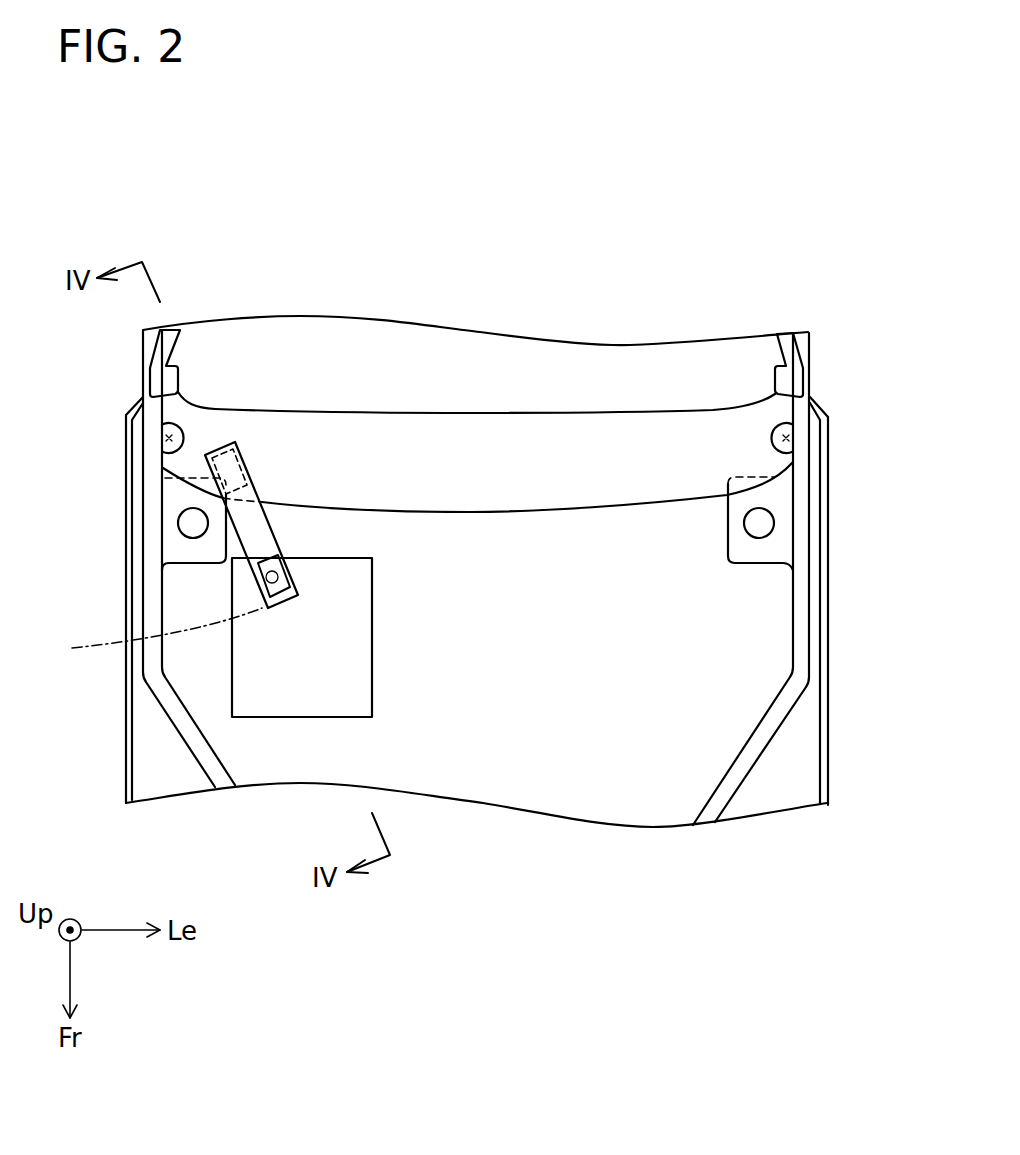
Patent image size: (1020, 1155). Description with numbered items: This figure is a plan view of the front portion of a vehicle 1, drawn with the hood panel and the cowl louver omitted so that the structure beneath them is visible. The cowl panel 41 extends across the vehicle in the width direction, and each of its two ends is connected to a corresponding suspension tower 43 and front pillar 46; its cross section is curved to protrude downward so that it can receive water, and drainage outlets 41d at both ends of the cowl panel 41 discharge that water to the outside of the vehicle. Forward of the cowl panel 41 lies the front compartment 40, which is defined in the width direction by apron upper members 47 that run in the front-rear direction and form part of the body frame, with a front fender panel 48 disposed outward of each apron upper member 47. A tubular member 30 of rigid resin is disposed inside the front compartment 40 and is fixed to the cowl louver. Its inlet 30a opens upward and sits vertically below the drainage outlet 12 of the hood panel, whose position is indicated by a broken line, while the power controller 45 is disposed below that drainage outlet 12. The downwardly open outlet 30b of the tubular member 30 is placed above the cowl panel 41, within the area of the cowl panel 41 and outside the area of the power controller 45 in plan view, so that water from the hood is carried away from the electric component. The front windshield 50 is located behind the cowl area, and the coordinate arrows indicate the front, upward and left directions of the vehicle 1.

The vehicle 1 is at (857, 172).
The drainage outlet 12 is at (149, 636).
The tubular member 30 is at (160, 530).
The inlet 30a is at (258, 566).
The outlet 30b is at (205, 452).
The front compartment 40 is at (468, 660).
The cowl panel 41 is at (557, 485).
The drainage outlets 41d is at (170, 438).
The suspension tower 43 is at (176, 502).
The power controller 45 is at (280, 707).
The front pillar 46 is at (160, 382).
The apron upper members 47 is at (153, 662).
The front fender panel 48 is at (132, 740).
The front windshield 50 is at (345, 342).